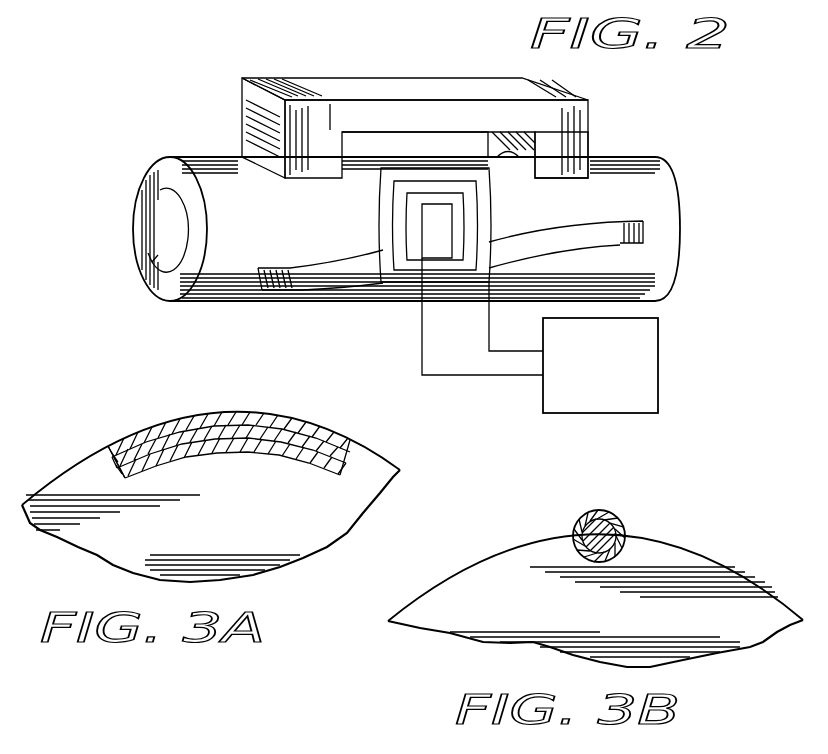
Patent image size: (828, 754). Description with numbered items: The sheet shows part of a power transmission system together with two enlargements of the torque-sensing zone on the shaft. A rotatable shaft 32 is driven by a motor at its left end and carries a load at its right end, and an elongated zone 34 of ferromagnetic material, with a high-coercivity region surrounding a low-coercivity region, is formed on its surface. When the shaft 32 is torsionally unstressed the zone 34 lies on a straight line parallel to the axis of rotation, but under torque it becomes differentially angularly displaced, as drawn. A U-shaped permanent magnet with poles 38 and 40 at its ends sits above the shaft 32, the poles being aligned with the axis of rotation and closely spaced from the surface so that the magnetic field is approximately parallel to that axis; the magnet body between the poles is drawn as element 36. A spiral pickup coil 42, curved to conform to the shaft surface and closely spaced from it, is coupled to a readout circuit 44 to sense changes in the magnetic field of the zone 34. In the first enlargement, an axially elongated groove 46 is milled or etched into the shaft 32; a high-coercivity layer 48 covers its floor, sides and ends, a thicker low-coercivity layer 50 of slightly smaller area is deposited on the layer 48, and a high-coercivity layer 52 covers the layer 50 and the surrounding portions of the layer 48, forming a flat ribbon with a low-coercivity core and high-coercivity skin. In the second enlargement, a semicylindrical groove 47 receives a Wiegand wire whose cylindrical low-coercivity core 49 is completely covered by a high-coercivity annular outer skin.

In FIG. 2, the rotatable shaft 32 is at (632, 157).
In FIG. 3A, the rotatable shaft 32 is at (383, 456).
In FIG. 3B, the rotatable shaft 32 is at (733, 567).
In FIG. 2, the elongated zone 34 is at (320, 270).
In FIG. 3A, the elongated zone 34 is at (217, 443).
In FIG. 3B, the elongated zone 34 is at (599, 516).
In FIG. 2, the bracket body 36 is at (408, 111).
In FIG. 2, the pole 38 is at (258, 122).
In FIG. 2, the pole 40 is at (572, 140).
In FIG. 2, the spiral pickup coil 42 is at (476, 280).
In FIG. 2, the readout circuit 44 is at (658, 330).
In FIG. 3A, the axially elongated groove 46 is at (124, 442).
In FIG. 3B, the semicylindrical groove 47 is at (623, 528).
In FIG. 3A, the layer of ferromagnetic material 48 is at (300, 460).
In FIG. 3B, the cylindrical core 49 is at (584, 526).
In FIG. 3A, the elongated layer 50 is at (280, 426).
In FIG. 3A, the layer of ferromagnetic material 52 is at (197, 425).